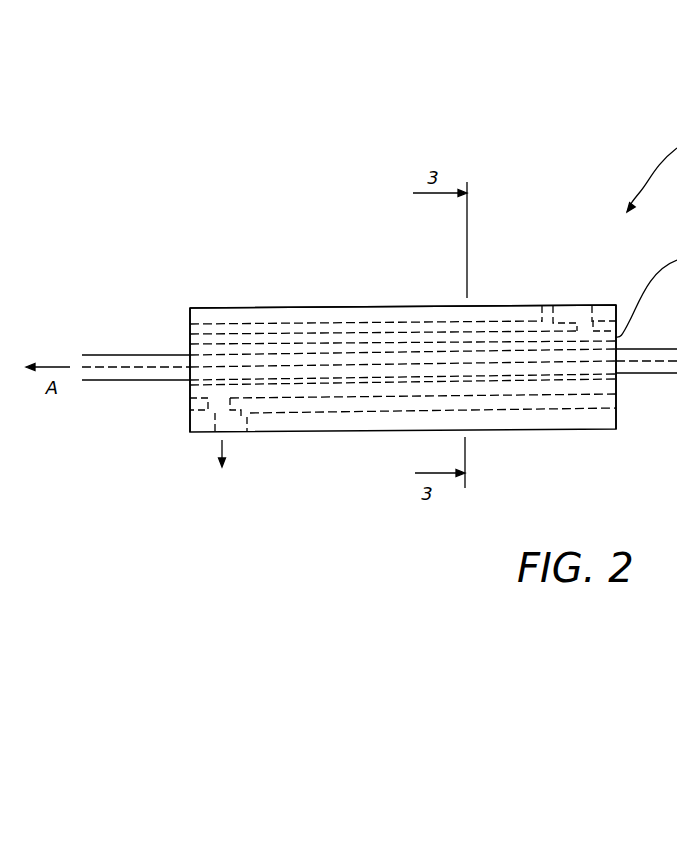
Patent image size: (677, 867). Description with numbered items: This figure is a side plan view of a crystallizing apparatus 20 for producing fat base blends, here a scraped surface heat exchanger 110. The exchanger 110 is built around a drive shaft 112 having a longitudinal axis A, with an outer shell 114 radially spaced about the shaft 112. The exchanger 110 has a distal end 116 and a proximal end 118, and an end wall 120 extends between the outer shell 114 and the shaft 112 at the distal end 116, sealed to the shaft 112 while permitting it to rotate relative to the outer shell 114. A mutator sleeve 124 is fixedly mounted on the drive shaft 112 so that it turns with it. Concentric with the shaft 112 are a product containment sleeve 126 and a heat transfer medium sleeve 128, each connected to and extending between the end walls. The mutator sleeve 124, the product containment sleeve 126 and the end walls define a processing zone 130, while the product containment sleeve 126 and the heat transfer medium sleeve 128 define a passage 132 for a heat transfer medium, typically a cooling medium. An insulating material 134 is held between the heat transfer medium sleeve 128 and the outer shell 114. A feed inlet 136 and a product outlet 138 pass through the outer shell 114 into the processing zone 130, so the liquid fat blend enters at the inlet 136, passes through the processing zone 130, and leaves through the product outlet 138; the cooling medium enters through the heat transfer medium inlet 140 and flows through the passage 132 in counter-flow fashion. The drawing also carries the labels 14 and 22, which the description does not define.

The optical fiber 14 is at (552, 313).
The crystallizing apparatus 20 is at (559, 166).
The direction of insertion 22 is at (222, 468).
The scraped surface heat exchanger 110 is at (585, 223).
The drive shaft 112 is at (327, 352).
The outer shell 114 is at (215, 308).
The distal end 116 is at (181, 333).
The proximal end 118 is at (624, 305).
The end wall 120 is at (190, 344).
The mutator sleeve 124 is at (408, 338).
The product containment sleeve 126 is at (285, 334).
The heat transfer medium sleeve 128 is at (238, 324).
The processing zone 130 is at (375, 338).
The passage 132 is at (333, 327).
The insulating material 134 is at (262, 316).
The feed inlet 136 is at (578, 317).
The product outlet 138 is at (215, 432).
The heat transfer medium inlet 140 is at (247, 432).